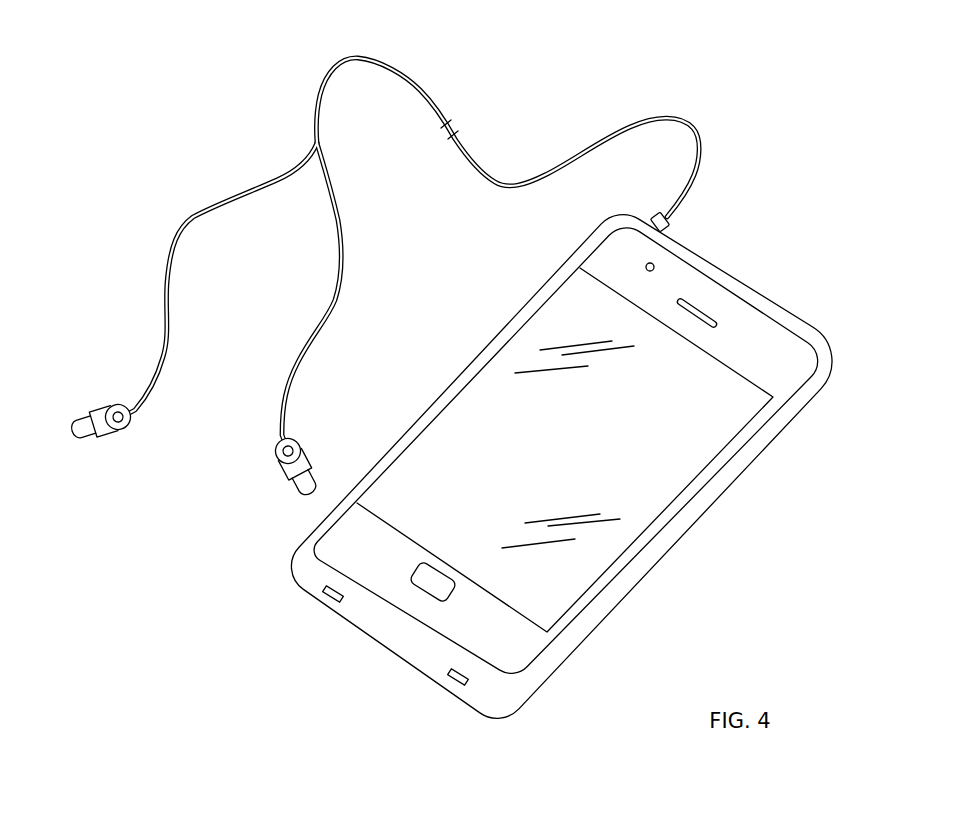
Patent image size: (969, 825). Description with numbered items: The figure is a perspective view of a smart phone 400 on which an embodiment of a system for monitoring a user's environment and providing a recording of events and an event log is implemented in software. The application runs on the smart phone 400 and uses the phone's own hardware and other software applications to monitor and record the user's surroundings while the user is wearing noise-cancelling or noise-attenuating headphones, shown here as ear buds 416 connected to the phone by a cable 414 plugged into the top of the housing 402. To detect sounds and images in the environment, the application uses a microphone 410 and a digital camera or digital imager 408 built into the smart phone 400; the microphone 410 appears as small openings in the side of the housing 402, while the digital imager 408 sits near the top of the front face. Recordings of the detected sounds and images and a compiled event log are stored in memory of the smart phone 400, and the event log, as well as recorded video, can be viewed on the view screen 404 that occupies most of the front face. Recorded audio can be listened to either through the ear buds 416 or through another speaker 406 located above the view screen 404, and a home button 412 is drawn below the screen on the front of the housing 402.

The smart phone 400 is at (797, 208).
The device housing 402 is at (767, 346).
The view screen 404 is at (549, 452).
The speaker 406 is at (700, 310).
The digital camera or digital imager 408 is at (654, 266).
The microphone 410 is at (320, 602).
The home button 412 is at (428, 598).
The headset cable 414 is at (412, 81).
The ear buds 416 is at (114, 433).